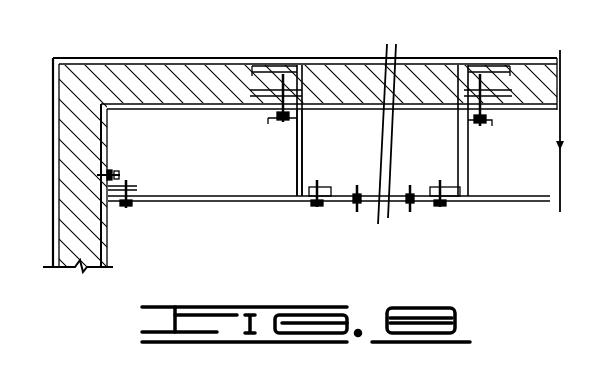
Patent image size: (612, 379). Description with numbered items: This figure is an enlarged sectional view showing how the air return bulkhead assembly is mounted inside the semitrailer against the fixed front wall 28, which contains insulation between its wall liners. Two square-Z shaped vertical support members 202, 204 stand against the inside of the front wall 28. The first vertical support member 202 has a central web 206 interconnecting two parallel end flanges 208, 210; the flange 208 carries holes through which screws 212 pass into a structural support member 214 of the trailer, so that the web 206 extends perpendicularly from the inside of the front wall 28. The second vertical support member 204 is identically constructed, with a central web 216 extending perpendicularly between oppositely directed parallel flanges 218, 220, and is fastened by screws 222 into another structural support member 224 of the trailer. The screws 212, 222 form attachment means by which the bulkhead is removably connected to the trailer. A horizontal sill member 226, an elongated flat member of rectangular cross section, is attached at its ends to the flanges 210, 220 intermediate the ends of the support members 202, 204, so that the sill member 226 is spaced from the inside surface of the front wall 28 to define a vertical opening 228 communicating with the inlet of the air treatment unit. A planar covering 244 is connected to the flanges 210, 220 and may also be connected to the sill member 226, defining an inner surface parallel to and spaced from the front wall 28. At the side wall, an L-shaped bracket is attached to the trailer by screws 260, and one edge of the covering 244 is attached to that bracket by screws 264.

The front wall 28 is at (164, 105).
The vertical support member 202 is at (378, 150).
The vertical support member 204 is at (472, 148).
The central web 206 is at (297, 135).
The end flange 208 is at (292, 118).
The end flange 210 is at (323, 186).
The screws 212 is at (271, 66).
The structural support member 214 is at (313, 64).
The central web 216 is at (458, 150).
The flange 218 is at (458, 122).
The flange 220 is at (446, 188).
The screws 222 is at (490, 96).
The structural support member 224 is at (452, 78).
The horizontal sill member 226 is at (388, 216).
The vertical opening 228 is at (357, 203).
The covering 244 is at (190, 198).
The screws 260 is at (106, 176).
The screws 264 is at (128, 207).